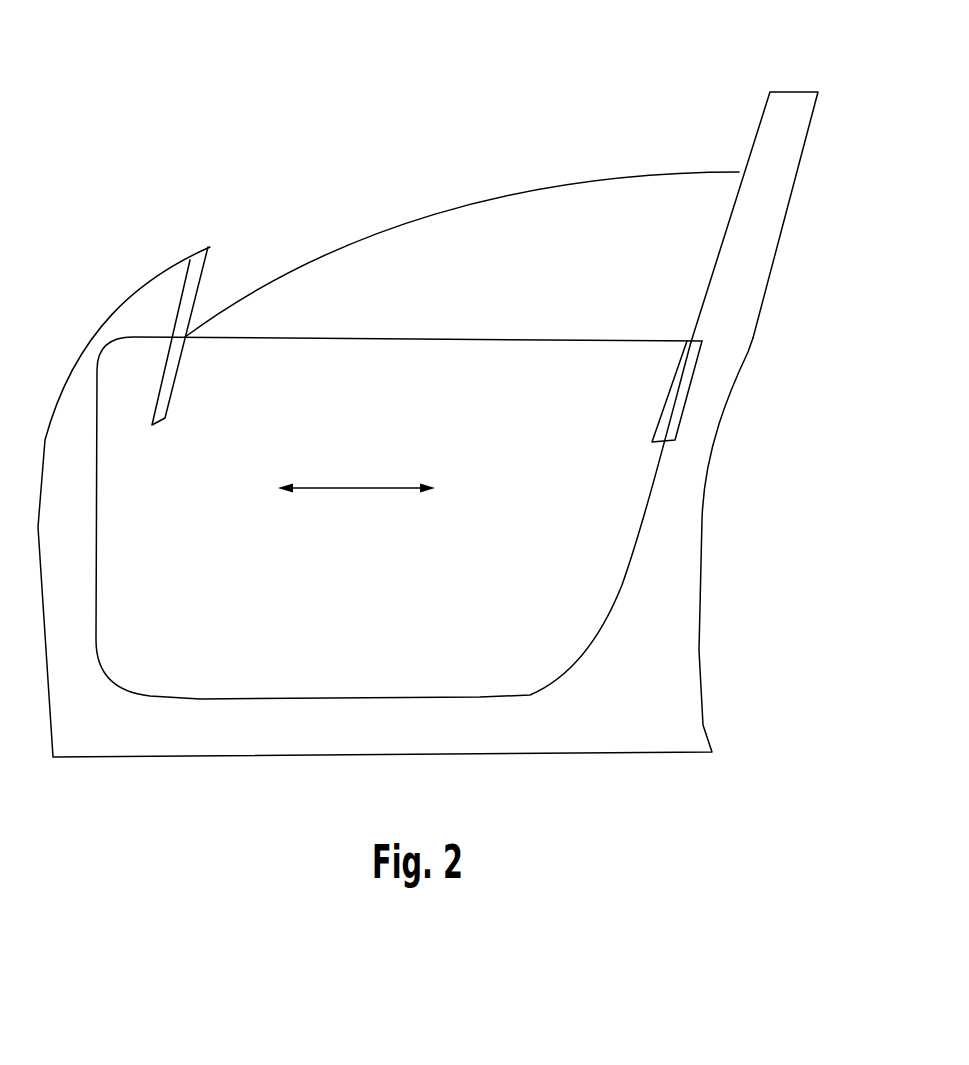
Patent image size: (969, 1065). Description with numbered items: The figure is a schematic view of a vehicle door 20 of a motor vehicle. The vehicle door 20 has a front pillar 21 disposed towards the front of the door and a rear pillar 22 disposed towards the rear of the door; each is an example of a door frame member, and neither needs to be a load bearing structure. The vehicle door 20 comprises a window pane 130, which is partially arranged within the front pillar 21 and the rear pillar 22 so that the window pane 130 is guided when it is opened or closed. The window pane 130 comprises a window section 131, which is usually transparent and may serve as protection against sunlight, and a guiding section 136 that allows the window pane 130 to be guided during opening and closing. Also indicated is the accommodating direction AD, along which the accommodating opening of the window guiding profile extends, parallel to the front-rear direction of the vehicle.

The vehicle door 20 is at (119, 146).
The front pillar 21 is at (173, 350).
The rear pillar 22 is at (787, 122).
The window pane 130 is at (375, 206).
The window section 131 is at (502, 232).
The guiding section 136 is at (696, 260).
The accommodating direction AD is at (358, 488).